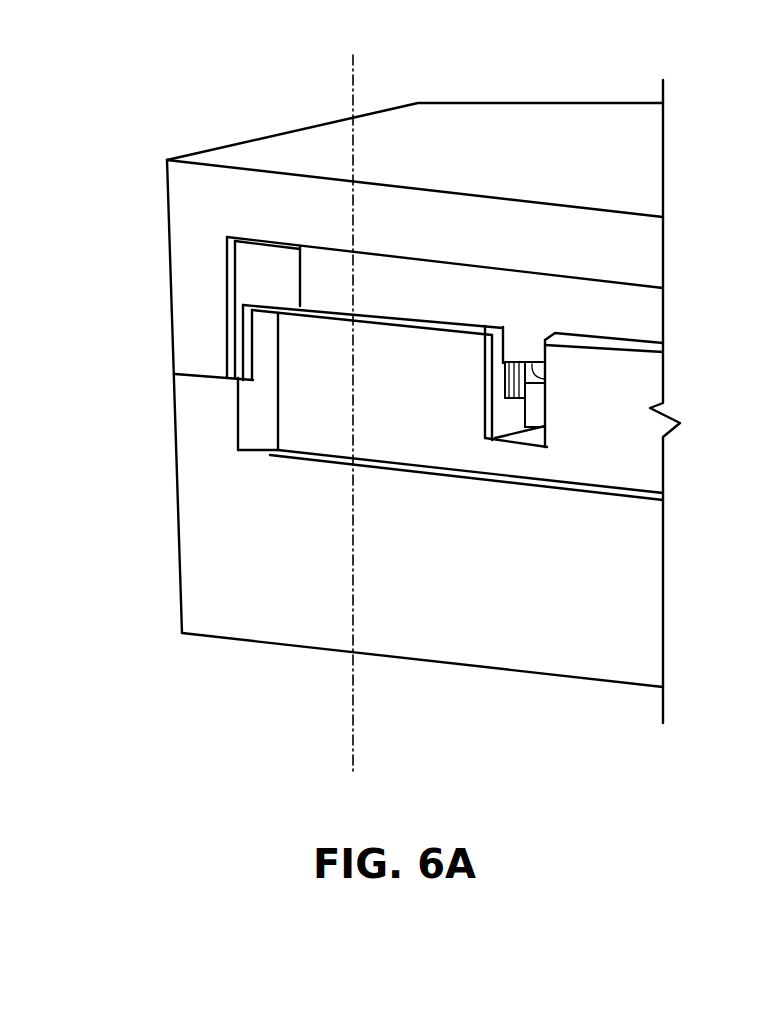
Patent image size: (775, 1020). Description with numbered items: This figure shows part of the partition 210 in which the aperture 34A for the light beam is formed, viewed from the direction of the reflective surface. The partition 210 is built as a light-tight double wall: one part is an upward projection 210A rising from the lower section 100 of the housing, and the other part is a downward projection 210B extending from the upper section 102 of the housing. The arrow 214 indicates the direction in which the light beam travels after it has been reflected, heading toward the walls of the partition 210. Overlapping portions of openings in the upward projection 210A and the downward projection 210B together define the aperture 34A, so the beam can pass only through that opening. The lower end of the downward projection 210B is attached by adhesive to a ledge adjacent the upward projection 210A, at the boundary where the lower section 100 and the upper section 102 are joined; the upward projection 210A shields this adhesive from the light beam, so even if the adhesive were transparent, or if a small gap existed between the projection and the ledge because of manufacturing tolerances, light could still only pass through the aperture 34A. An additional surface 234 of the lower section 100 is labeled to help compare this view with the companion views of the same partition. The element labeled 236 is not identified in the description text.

The lower section of the housing 100 is at (178, 612).
The upper section of the housing 102 is at (168, 258).
The partition 210 is at (310, 465).
The upward projection 210A is at (350, 412).
The downward projection 210B is at (345, 272).
The arrow 214 is at (473, 422).
The additional surface of the lower section 234 is at (392, 318).
The insert 236 is at (545, 372).
The aperture 34A is at (517, 413).